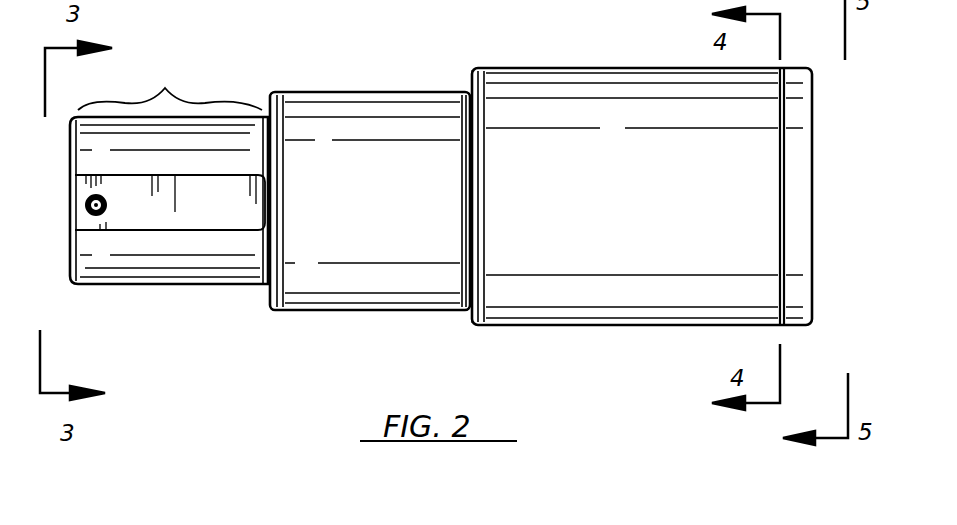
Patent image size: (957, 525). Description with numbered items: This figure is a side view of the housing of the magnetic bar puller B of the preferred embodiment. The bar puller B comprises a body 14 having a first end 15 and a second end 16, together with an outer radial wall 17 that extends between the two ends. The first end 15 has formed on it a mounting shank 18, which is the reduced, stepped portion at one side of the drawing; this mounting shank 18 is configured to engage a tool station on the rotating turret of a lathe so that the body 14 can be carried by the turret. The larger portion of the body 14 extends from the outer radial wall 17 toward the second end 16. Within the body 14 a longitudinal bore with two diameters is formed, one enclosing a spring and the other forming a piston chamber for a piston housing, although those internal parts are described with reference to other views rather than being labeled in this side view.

The body 14 is at (642, 196).
The first end 15 is at (74, 287).
The second end 16 is at (812, 185).
The outer radial wall 17 is at (387, 310).
The mounting shank 18 is at (170, 85).
The bar puller B is at (510, 196).